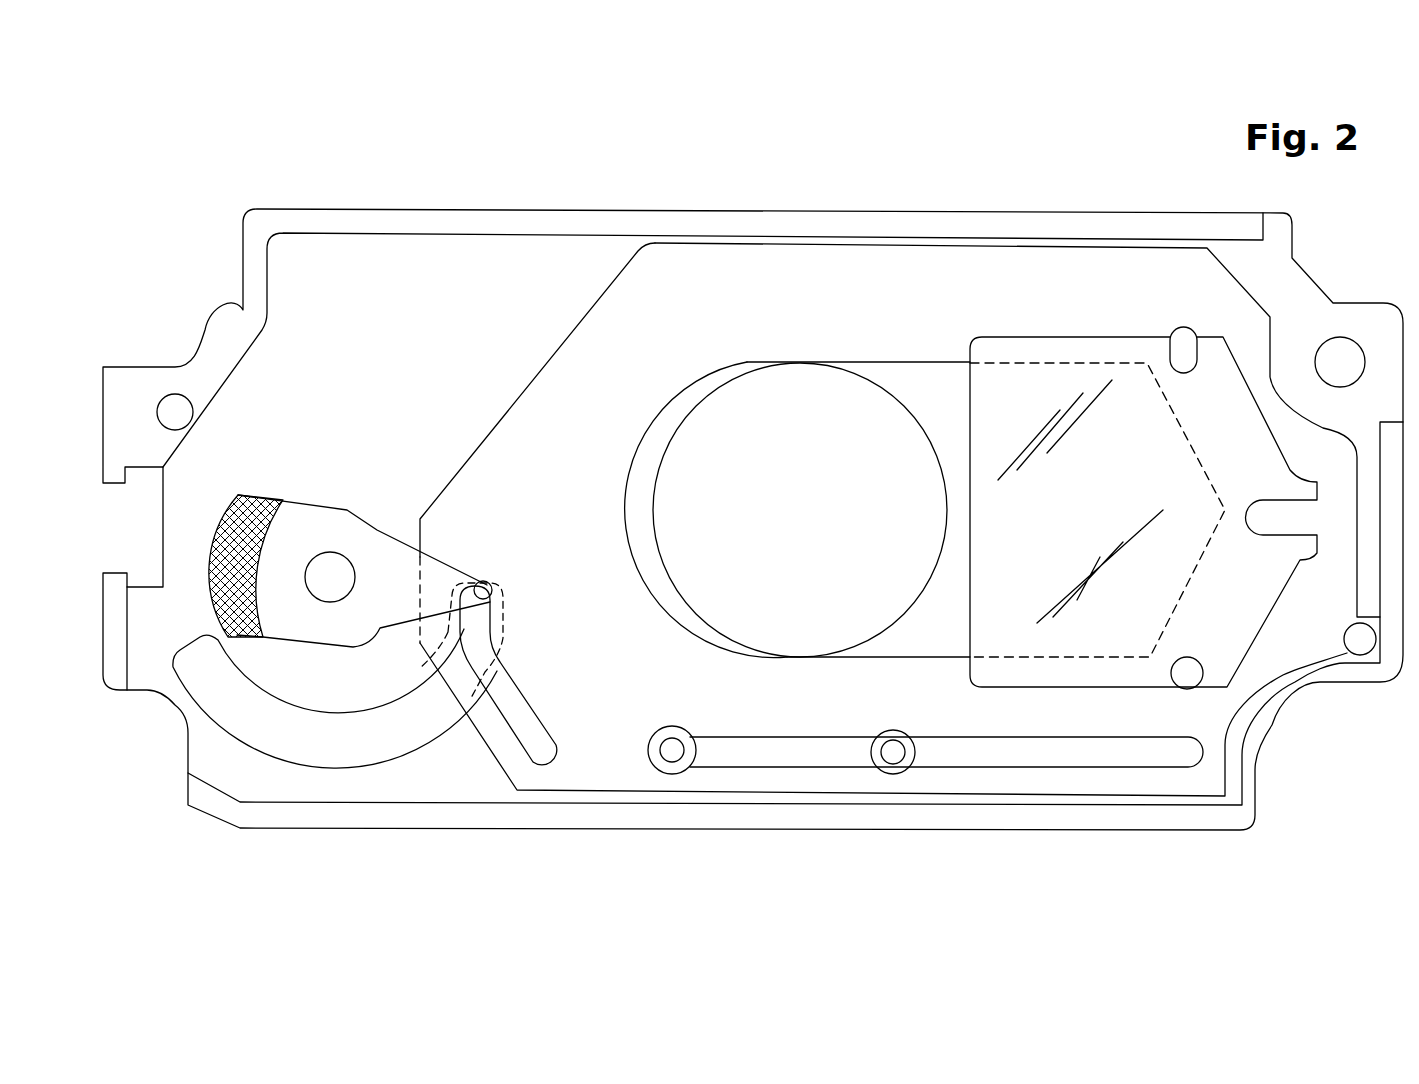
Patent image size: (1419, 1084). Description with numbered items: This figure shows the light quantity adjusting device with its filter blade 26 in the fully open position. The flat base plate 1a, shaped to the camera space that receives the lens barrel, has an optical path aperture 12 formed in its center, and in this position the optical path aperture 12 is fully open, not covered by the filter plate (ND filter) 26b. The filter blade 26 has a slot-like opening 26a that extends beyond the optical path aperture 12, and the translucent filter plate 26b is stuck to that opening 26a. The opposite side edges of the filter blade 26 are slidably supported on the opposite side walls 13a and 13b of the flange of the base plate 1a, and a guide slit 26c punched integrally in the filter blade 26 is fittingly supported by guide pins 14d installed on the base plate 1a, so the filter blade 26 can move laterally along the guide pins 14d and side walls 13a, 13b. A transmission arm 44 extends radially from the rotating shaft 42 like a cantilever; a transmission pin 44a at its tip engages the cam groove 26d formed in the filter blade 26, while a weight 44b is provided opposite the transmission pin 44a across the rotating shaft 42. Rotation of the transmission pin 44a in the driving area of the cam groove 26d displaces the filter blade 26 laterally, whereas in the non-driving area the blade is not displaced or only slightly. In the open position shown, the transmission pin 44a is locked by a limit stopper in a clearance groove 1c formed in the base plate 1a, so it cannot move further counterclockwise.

The base plate 1a is at (290, 367).
The clearance groove 1c is at (273, 758).
The optical path aperture 12 is at (905, 413).
The side wall 13a is at (723, 813).
The side wall 13b is at (663, 218).
The guide pin 14d is at (670, 755).
The filter blade 26 is at (548, 357).
The opening 26a is at (1181, 580).
The filter plate (ND filter) 26b is at (1100, 335).
The guide slit 26c is at (970, 750).
The cam groove 26d is at (520, 718).
The rotating shaft 42 is at (335, 575).
The transmission arm 44 is at (287, 542).
The transmission pin 44a is at (492, 582).
The weight 44b is at (223, 513).